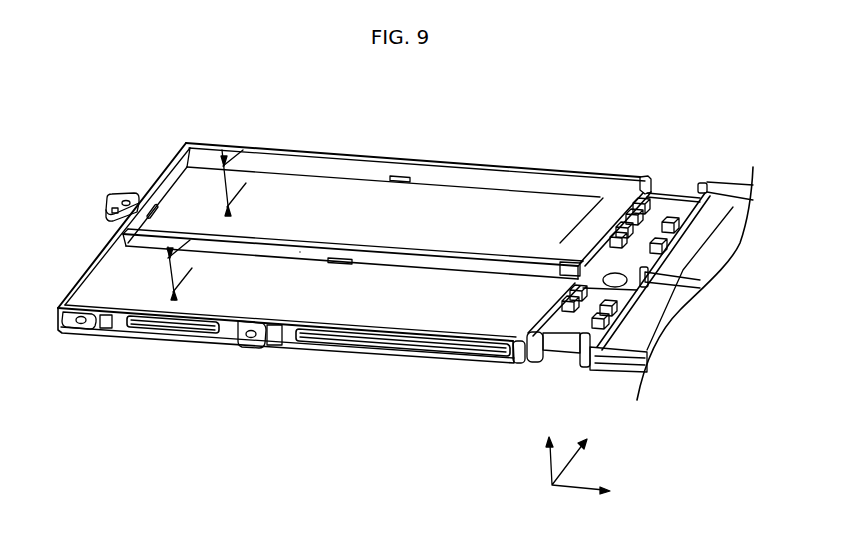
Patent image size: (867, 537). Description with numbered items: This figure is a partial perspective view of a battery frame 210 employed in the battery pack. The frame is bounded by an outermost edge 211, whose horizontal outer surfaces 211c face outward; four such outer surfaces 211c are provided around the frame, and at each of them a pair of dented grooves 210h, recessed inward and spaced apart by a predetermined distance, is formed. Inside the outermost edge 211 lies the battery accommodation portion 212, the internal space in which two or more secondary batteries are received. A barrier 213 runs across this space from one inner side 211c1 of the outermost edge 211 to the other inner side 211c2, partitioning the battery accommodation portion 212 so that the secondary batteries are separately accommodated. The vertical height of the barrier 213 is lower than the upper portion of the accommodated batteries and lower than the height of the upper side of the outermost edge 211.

The battery frame 210 is at (166, 142).
The outermost edge 211 is at (270, 146).
The outer surface 211c is at (398, 155).
The inner side 211c1 is at (112, 250).
The other inner side 211c2 is at (590, 232).
The battery accommodation portion 212 is at (465, 306).
The barrier 213 is at (290, 240).
The dented groove 210h is at (205, 329).